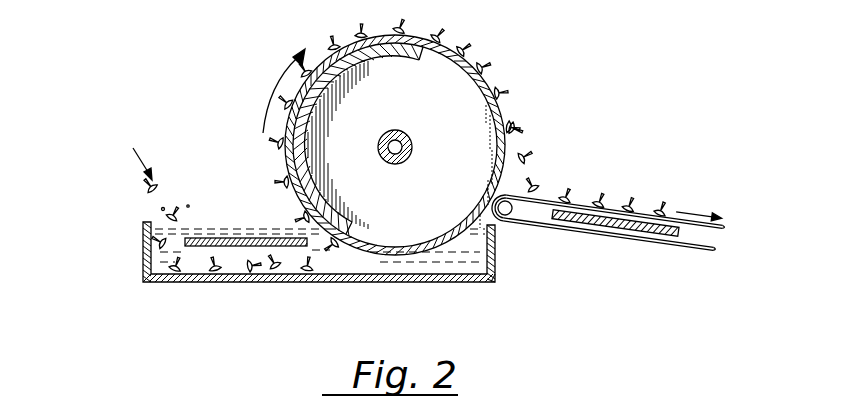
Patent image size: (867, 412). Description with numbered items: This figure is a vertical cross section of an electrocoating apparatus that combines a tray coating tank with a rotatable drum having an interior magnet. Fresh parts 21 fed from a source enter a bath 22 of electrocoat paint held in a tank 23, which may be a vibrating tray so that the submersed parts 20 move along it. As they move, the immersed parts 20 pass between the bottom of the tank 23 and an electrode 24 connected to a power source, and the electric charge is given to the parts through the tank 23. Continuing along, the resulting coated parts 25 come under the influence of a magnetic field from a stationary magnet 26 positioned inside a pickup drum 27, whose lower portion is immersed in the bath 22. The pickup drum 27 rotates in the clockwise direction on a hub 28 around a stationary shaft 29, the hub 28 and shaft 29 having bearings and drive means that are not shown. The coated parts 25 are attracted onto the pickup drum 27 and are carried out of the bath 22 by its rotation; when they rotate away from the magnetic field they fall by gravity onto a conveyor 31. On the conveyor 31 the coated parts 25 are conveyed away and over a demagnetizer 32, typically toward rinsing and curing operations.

The submersed parts 20 is at (290, 268).
The fresh parts 21 is at (150, 186).
The bath 22 is at (195, 262).
The tank 23 is at (145, 240).
The electrode 24 is at (232, 238).
The coated parts 25 is at (535, 184).
The stationary magnet 26 is at (338, 214).
The pickup drum 27 is at (288, 165).
The hub 28 is at (400, 130).
The stationary shaft 29 is at (412, 157).
The conveyor 31 is at (714, 235).
The demagnetizer 32 is at (612, 230).